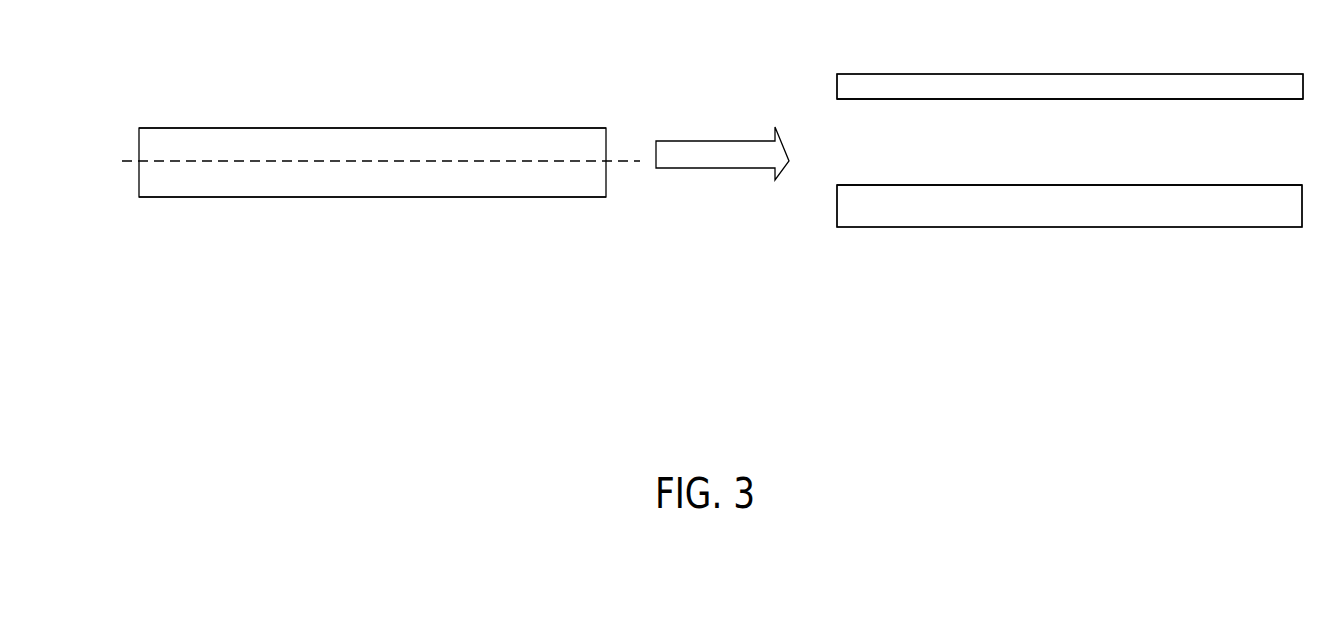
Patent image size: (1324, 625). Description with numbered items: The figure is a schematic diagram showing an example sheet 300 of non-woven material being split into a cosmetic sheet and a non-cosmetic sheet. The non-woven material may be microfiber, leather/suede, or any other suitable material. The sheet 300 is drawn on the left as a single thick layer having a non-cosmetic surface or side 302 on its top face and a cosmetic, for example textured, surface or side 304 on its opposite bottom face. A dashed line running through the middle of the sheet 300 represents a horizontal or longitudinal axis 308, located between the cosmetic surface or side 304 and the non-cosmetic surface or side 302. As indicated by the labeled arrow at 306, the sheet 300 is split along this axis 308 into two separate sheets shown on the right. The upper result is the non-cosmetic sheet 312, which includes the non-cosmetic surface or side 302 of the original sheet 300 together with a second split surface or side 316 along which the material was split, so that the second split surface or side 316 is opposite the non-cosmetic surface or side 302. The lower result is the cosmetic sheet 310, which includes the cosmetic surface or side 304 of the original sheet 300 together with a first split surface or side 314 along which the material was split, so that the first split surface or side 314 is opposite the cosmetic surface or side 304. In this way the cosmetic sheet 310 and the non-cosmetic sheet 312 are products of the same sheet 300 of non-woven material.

The sheet of non-woven material 300 is at (154, 116).
The non-cosmetic surface or side 302 is at (222, 129).
The cosmetic surface or side 304 is at (216, 197).
The split 306 is at (712, 132).
The horizontal or longitudinal axis 308 is at (620, 161).
The cosmetic sheet 310 is at (845, 235).
The non-cosmetic sheet 312 is at (855, 70).
The first split surface or side 314 is at (988, 185).
The second split surface or side 316 is at (1074, 99).